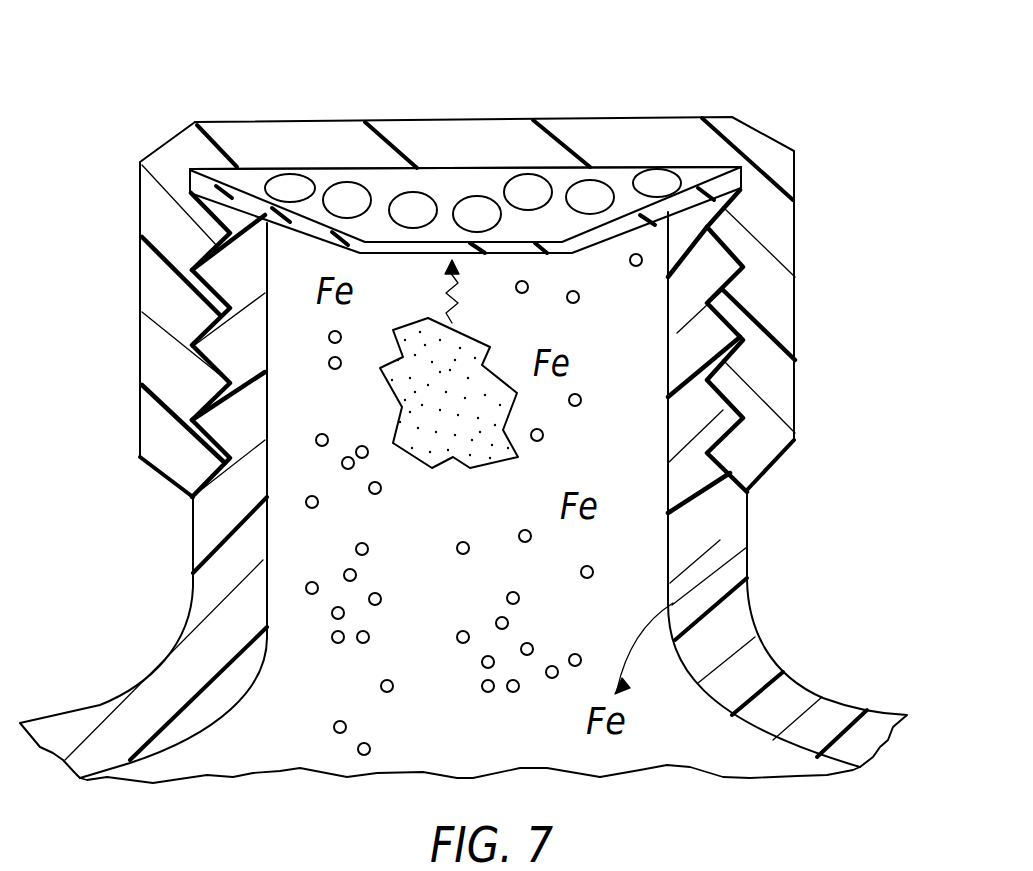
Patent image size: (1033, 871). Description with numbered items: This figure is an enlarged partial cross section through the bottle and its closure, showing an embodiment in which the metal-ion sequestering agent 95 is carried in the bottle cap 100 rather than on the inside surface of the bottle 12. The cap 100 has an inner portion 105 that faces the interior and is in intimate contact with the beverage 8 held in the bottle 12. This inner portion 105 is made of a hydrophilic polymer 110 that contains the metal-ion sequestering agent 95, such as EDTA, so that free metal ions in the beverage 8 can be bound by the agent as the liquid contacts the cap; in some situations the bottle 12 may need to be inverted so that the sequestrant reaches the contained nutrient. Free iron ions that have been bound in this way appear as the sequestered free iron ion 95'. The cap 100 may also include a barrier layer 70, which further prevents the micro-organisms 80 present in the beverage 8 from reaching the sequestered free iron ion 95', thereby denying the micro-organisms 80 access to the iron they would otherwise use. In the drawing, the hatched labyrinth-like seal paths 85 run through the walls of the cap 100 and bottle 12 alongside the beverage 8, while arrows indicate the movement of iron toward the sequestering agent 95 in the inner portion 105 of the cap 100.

The beverage 8 is at (290, 543).
The bottle 12 is at (767, 657).
The barrier layer 70 is at (720, 180).
The micro-organisms 80 is at (502, 405).
The labyrinth seal path 85 is at (310, 285).
The metal-ion sequestering agent 95 is at (468, 142).
The sequestered free iron ion 95' is at (437, 127).
The bottle cap 100 is at (688, 130).
The inner portion of the cap 105 is at (652, 228).
The hydrophilic polymer 110 is at (448, 172).